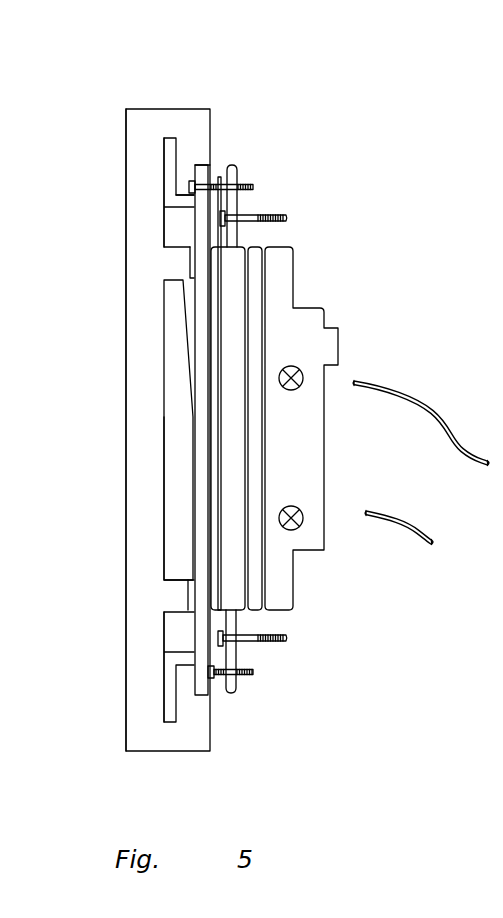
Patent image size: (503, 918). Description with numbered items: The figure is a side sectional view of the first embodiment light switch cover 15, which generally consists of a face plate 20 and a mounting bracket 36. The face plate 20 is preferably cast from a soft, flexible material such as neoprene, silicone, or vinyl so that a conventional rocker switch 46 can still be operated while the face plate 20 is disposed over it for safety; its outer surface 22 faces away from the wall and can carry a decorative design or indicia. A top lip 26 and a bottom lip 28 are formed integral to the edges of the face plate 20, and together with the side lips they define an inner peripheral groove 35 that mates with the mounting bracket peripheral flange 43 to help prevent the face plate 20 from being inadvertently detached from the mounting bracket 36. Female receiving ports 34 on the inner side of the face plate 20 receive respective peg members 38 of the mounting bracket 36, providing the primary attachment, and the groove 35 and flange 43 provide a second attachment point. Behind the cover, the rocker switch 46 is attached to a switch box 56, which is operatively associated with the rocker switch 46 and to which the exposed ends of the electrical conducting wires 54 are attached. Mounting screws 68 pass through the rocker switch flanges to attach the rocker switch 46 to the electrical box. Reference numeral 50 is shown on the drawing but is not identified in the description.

The light switch cover 15 is at (357, 123).
The face plate 20 is at (158, 437).
The outer surface 22 is at (126, 473).
The top lip 26 is at (185, 167).
The bottom lip 28 is at (187, 708).
The female receiving port 34 is at (173, 597).
The inner peripheral groove 35 is at (170, 138).
The mounting bracket 36 is at (197, 697).
The peg member 38 is at (188, 578).
The mounting bracket peripheral flange 43 is at (164, 174).
The rocker switch 46 is at (185, 293).
The bolt 50 is at (250, 183).
The electrical conducting wires 54 is at (435, 411).
The switch box 56 is at (295, 330).
The mounting screws 68 is at (287, 220).